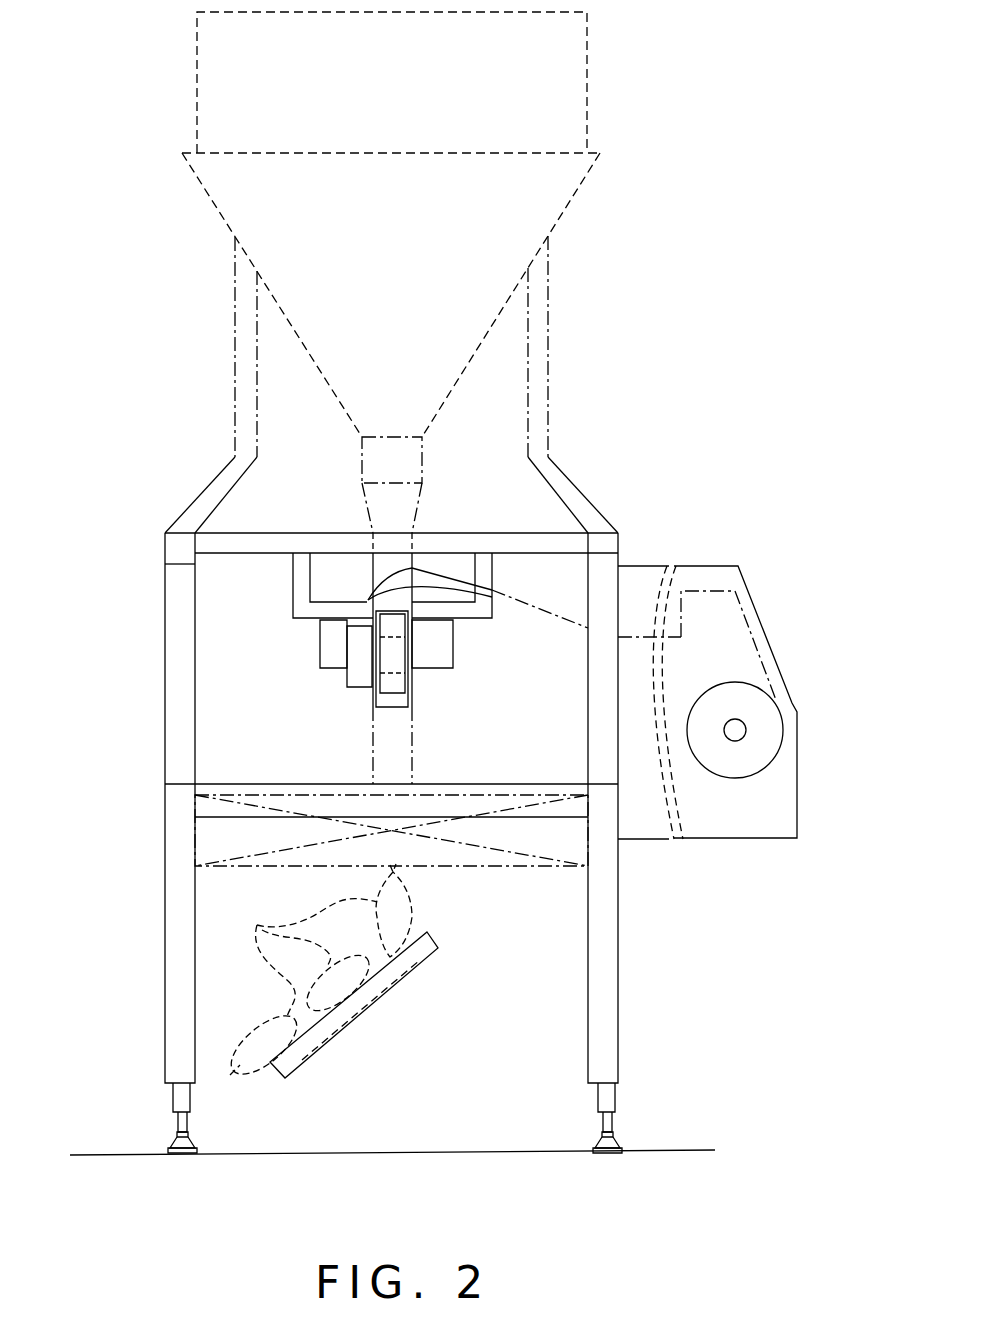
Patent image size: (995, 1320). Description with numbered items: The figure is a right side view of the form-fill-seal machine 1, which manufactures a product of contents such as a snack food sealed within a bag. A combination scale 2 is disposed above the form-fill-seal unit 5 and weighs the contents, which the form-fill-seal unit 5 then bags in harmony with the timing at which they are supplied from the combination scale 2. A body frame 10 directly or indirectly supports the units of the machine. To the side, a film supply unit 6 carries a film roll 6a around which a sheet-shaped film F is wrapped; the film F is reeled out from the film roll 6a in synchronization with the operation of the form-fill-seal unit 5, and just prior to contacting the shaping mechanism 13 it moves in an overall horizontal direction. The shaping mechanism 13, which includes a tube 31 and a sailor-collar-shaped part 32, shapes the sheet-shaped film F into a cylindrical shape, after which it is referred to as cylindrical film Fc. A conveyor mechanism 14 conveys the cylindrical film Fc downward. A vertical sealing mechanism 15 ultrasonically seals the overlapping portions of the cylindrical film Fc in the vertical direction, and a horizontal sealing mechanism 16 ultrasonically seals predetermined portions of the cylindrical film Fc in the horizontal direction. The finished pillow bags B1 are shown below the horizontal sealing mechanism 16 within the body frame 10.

The form-fill-seal machine 1 is at (128, 542).
The combination scale 2 is at (602, 117).
The form-fill-seal unit 5 is at (225, 682).
The film supply unit 6 is at (642, 562).
The film roll 6a is at (713, 707).
The body frame 10 is at (185, 727).
The shaping mechanism 13 is at (440, 567).
The conveyor mechanism 14 is at (400, 652).
The vertical sealing mechanism 15 is at (355, 650).
The horizontal sealing mechanism 16 is at (445, 868).
The tube 31 is at (382, 565).
The sailor-collar-shaped part 32 is at (400, 578).
The film F is at (588, 625).
The cylindrical film Fc is at (388, 755).
The pillow bag B1 is at (317, 974).